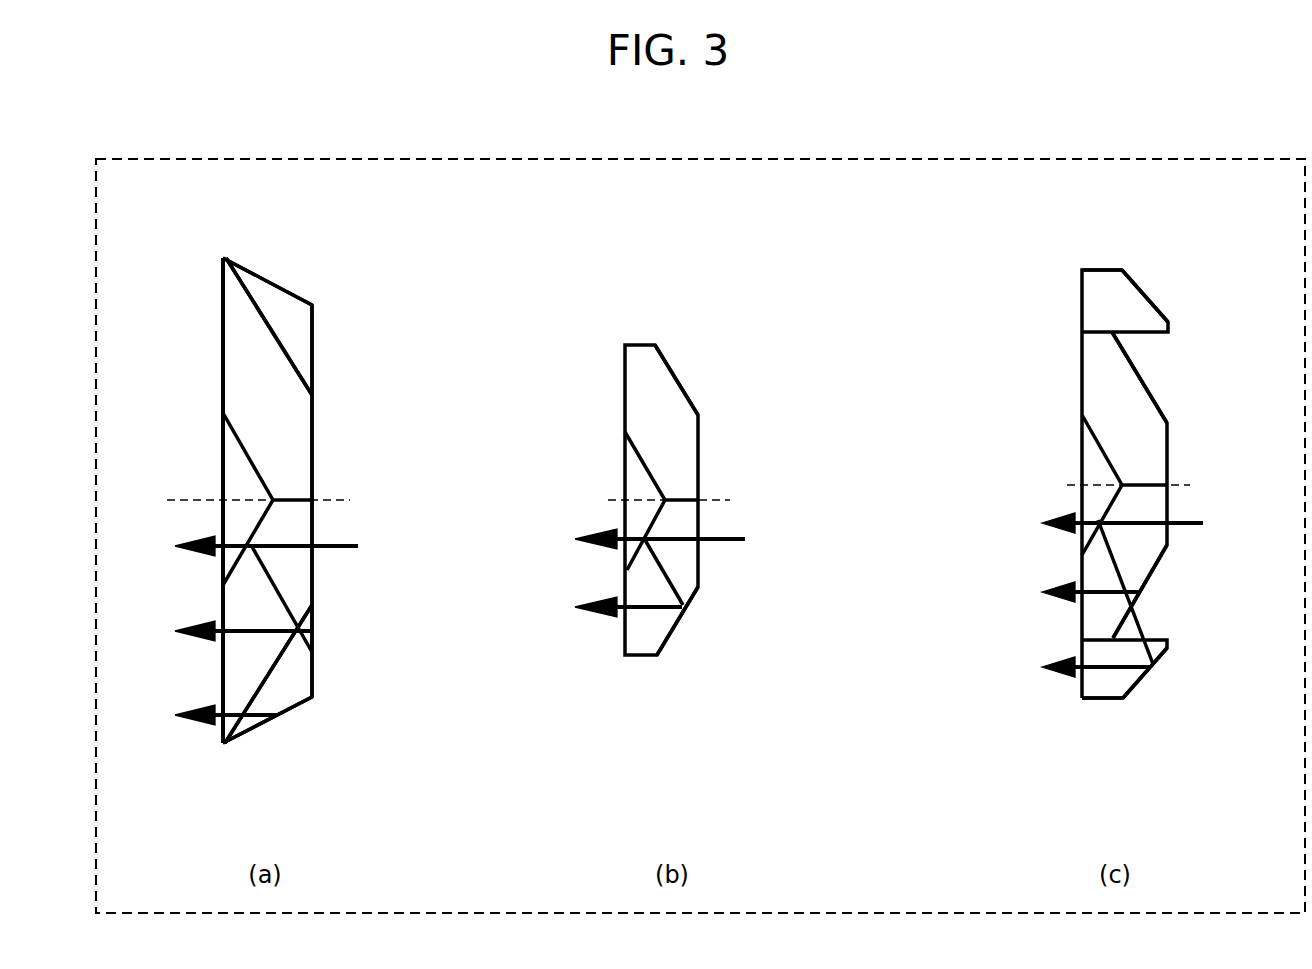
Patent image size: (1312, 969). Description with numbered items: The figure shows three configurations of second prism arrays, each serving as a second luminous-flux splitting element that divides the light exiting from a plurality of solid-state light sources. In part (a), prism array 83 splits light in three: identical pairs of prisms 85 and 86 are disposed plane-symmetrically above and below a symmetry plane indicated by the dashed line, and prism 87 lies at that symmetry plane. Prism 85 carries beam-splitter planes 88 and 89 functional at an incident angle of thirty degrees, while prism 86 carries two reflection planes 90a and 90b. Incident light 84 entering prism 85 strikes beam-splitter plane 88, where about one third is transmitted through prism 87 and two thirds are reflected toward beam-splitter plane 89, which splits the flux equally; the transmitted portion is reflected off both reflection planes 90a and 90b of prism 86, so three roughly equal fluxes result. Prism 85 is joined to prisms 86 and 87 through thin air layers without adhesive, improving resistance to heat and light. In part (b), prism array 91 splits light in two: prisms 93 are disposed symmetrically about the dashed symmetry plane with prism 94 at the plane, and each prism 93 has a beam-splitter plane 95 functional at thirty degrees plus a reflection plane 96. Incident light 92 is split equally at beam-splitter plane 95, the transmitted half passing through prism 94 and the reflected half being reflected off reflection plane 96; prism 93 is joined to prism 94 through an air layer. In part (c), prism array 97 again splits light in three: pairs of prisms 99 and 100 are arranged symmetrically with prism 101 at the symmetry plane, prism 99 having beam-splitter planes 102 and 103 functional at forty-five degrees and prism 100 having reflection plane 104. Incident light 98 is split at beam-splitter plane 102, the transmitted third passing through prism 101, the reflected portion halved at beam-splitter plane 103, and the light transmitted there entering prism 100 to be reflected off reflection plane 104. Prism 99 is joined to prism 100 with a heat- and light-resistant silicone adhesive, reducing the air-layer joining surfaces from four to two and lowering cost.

The prism array 83 is at (210, 258).
The incident light 84 is at (335, 548).
The prism 85 is at (300, 527).
The prism 86 is at (295, 318).
The prism 87 is at (238, 527).
The beam-splitter plane 88 is at (252, 525).
The beam-splitter plane 89 is at (273, 333).
The reflection plane 90a is at (297, 290).
The reflection plane 90b is at (313, 365).
The prism array 91 is at (613, 337).
The incident light 92 is at (722, 542).
The prism 93 is at (687, 527).
The prism 94 is at (632, 525).
The beam-splitter plane 95 is at (650, 525).
The reflection plane 96 is at (682, 380).
The prism array 97 is at (1065, 243).
The incident light 98 is at (1182, 523).
The prism 99 is at (1153, 508).
The prism 100 is at (1115, 285).
The prism 101 is at (1088, 507).
The beam-splitter plane 102 is at (1107, 508).
The beam-splitter plane 103 is at (1150, 390).
The reflection plane 104 is at (1158, 303).